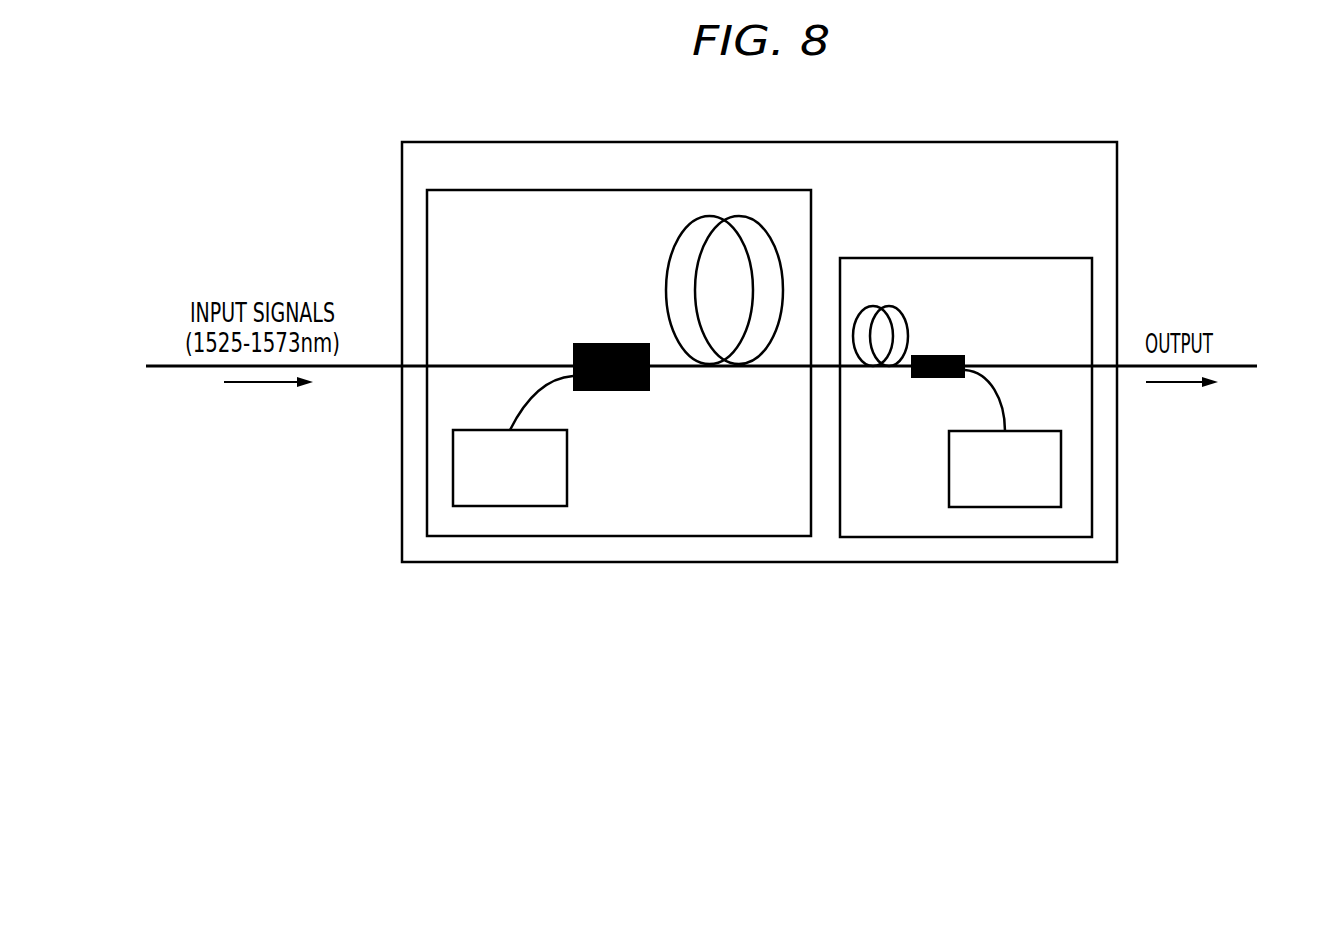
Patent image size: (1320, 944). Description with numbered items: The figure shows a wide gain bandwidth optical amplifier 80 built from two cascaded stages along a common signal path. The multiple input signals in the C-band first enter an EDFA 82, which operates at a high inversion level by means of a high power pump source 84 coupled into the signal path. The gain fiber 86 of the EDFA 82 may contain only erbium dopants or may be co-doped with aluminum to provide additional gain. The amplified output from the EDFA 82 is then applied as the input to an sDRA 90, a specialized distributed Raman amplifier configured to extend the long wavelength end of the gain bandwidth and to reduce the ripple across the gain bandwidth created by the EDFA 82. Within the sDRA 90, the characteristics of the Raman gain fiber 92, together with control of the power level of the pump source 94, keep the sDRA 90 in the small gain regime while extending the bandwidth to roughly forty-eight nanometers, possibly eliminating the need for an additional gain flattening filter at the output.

The wide gain bandwidth optical amplifier 80 is at (998, 109).
The EDFA 82 is at (490, 190).
The high power pump source 84 is at (490, 430).
The gain fiber 86 is at (677, 243).
The sDRA 90 is at (1012, 258).
The Raman gain fiber 92 is at (890, 306).
The pump source 94 is at (948, 465).